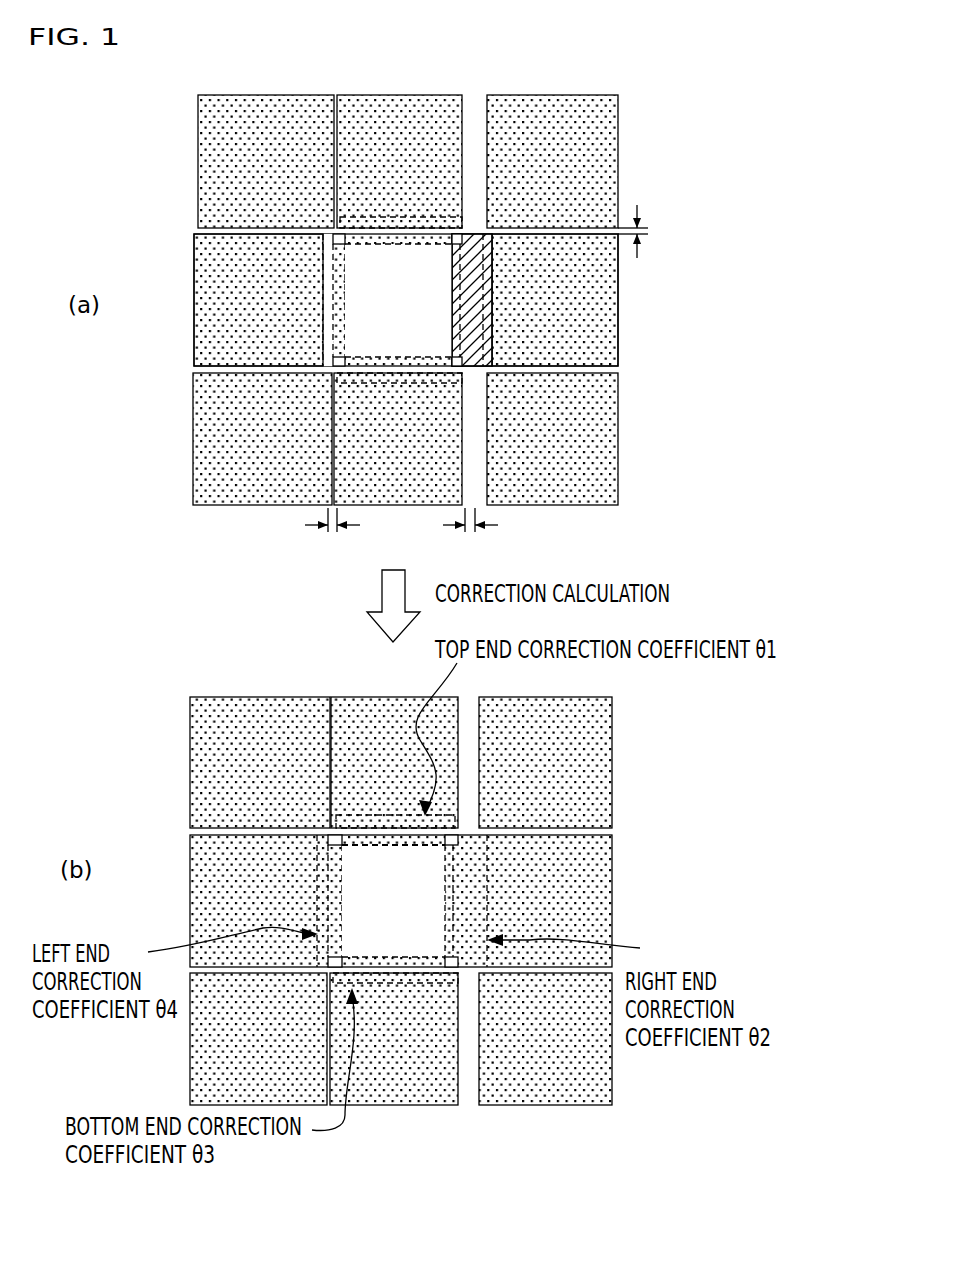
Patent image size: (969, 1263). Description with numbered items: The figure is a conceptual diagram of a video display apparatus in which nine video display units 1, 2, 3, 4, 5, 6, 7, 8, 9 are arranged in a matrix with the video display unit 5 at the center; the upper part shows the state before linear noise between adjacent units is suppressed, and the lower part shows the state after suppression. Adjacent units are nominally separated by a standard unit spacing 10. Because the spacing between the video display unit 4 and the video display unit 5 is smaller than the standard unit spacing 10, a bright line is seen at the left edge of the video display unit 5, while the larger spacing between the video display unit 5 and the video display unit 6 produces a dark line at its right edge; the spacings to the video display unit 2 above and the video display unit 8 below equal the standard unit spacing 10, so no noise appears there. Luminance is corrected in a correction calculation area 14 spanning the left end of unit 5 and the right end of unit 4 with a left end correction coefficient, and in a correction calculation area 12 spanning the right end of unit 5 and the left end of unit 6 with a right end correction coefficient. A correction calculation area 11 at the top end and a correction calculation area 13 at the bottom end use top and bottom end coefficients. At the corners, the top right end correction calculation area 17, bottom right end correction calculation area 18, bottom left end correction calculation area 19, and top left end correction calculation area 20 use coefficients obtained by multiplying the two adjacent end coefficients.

The video display unit 1 is at (280, 95).
The video display unit 2 is at (395, 95).
The video display unit 3 is at (558, 95).
The video display unit 4 is at (194, 288).
The video display unit 5 is at (397, 600).
The video display unit 6 is at (618, 290).
The video display unit 7 is at (193, 465).
The video display unit 8 is at (370, 505).
The video display unit 9 is at (618, 432).
The standard unit spacing 10 is at (333, 533).
The correction calculation area 11 is at (383, 217).
The correction calculation area 12 is at (493, 323).
The correction calculation area 13 is at (370, 383).
The correction calculation area 14 is at (323, 263).
The top right end correction calculation area 17 is at (463, 237).
The bottom right end correction calculation area 18 is at (456, 366).
The bottom left end correction calculation area 19 is at (338, 366).
The top left end correction calculation area 20 is at (340, 235).